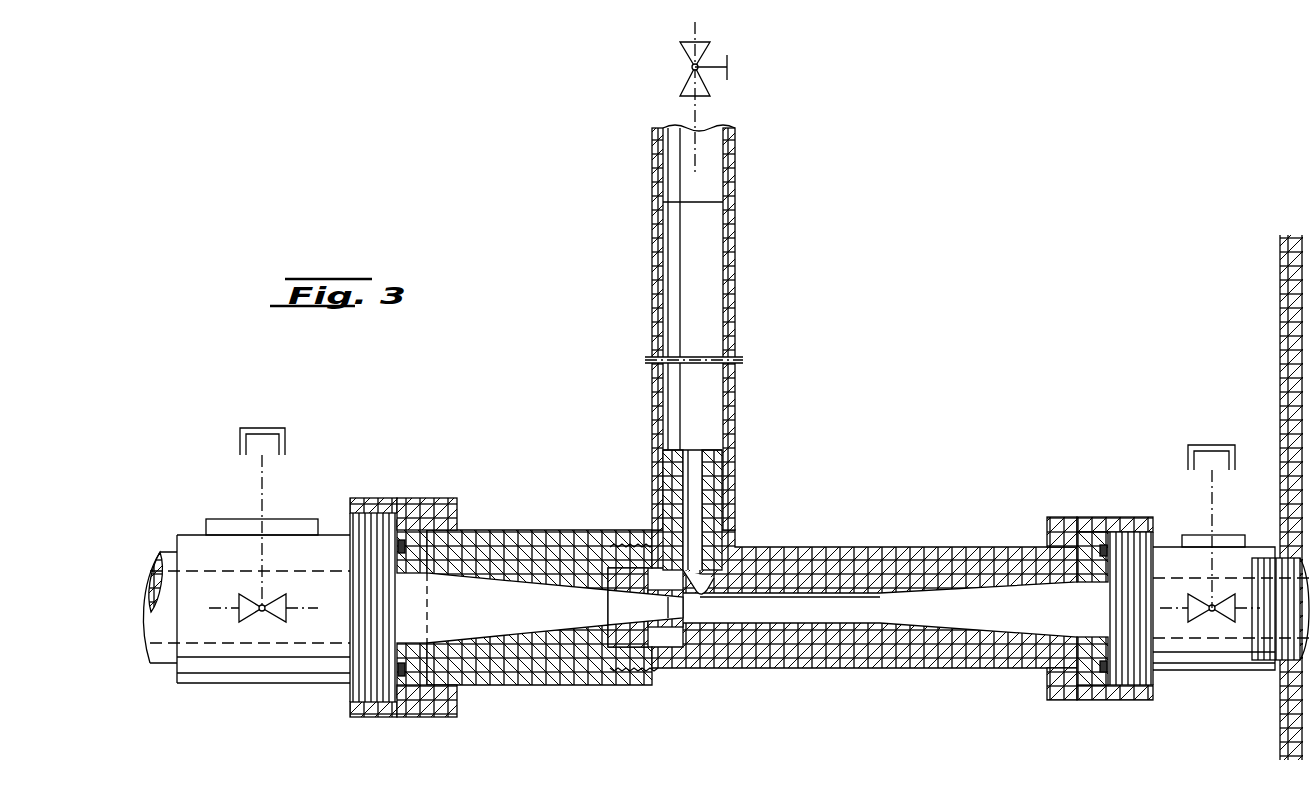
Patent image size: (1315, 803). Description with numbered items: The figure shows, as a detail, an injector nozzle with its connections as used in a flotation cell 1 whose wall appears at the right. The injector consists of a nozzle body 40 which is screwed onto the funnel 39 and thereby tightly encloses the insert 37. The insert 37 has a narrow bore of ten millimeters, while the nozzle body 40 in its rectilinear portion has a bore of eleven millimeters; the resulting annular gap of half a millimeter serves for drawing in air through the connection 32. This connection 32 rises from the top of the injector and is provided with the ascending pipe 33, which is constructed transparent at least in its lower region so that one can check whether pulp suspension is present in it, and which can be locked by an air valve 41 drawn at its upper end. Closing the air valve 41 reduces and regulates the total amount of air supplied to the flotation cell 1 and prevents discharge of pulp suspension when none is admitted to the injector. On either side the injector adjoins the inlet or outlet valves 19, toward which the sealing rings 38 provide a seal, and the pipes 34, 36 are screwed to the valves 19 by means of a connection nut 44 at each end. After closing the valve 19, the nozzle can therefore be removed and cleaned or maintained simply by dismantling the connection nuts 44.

The flotation cell 1 is at (1290, 308).
The inlet or outlet valve 19 is at (729, 555).
The connection 32 is at (712, 540).
The ascending pipe 33 is at (736, 162).
The inlet pipe 34 is at (1245, 628).
The pipe 36 is at (1300, 615).
The insert 37 is at (622, 585).
The sealing ring 38 is at (398, 547).
The funnel 39 is at (527, 690).
The nozzle body 40 is at (877, 672).
The air valve 41 is at (686, 73).
The connection nut 44 is at (440, 516).